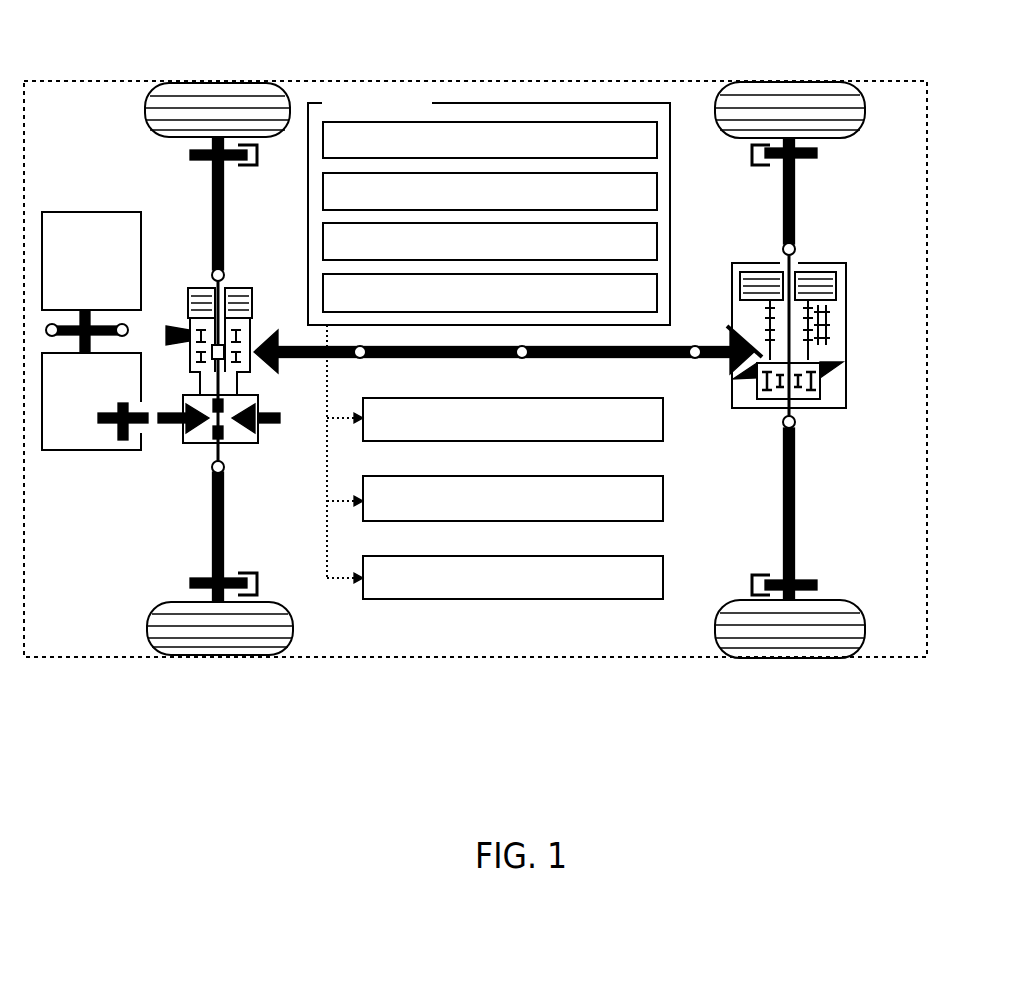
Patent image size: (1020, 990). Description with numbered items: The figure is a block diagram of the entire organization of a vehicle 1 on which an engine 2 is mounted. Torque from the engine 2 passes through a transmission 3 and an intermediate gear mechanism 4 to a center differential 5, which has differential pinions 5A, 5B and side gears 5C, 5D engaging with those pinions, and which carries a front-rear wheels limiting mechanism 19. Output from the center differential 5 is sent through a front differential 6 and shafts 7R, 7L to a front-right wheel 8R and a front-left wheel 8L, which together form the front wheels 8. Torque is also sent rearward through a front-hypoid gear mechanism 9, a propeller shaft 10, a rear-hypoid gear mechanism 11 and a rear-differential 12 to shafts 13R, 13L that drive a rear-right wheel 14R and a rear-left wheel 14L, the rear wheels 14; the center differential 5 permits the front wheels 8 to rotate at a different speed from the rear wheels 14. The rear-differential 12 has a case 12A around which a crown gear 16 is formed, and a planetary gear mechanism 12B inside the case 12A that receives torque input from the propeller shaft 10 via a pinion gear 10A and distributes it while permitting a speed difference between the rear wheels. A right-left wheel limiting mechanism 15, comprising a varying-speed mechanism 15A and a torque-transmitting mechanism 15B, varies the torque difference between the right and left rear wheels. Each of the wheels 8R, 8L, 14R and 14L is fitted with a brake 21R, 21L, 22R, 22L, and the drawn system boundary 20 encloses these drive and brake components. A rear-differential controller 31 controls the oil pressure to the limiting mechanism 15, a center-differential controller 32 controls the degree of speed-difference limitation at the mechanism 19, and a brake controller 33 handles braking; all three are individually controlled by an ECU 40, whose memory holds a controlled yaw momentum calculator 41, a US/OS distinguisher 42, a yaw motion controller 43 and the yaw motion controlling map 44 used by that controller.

The vehicle 1 is at (108, 29).
The engine 2 is at (86, 212).
The transmission 3 is at (90, 450).
The intermediate gear mechanism 4 is at (162, 428).
The center differential 5 is at (229, 412).
The differential pinion 5A is at (190, 412).
The differential pinion 5B is at (252, 412).
The side gear 5C is at (236, 442).
The side gear 5D is at (200, 404).
The front differential 6 is at (198, 364).
The shaft 7R is at (212, 243).
The shaft 7L is at (212, 483).
The front wheels 8 is at (193, 400).
The front-right wheel 8R is at (152, 113).
The front-left wheel 8L is at (152, 627).
The front-hypoid gear mechanism 9 is at (264, 325).
The propeller shaft 10 is at (455, 358).
The pinion gear 10A is at (728, 338).
The rear-hypoid gear mechanism 11 is at (742, 386).
The rear-differential 12 is at (812, 401).
The case 12A is at (820, 400).
The planetary gear mechanism 12B is at (776, 400).
The shaft 13R is at (795, 221).
The shaft 13L is at (795, 477).
The rear wheels 14 is at (811, 399).
The rear-right wheel 14R is at (852, 113).
The rear-left wheel 14L is at (855, 629).
The right-left wheel limiting mechanism 15 is at (805, 328).
The varying-speed mechanism 15A is at (836, 312).
The torque-transmitting mechanism 15B is at (840, 274).
The crown gear 16 is at (846, 368).
The front-rear wheels limiting mechanism 19 is at (186, 288).
The brake system 20 is at (573, 668).
The brake 21R is at (239, 180).
The brake 21L is at (246, 558).
The brake 22R is at (770, 178).
The brake 22L is at (771, 565).
The rear-differential controller 31 is at (624, 441).
The center-differential controller 32 is at (624, 521).
The brake controller 33 is at (624, 599).
The ECU 40 is at (507, 210).
The controlled yaw momentum calculator 41 is at (657, 136).
The US/OS distinguisher 42 is at (657, 187).
The yaw motion controller 43 is at (657, 236).
The yaw motion controlling map 44 is at (657, 286).